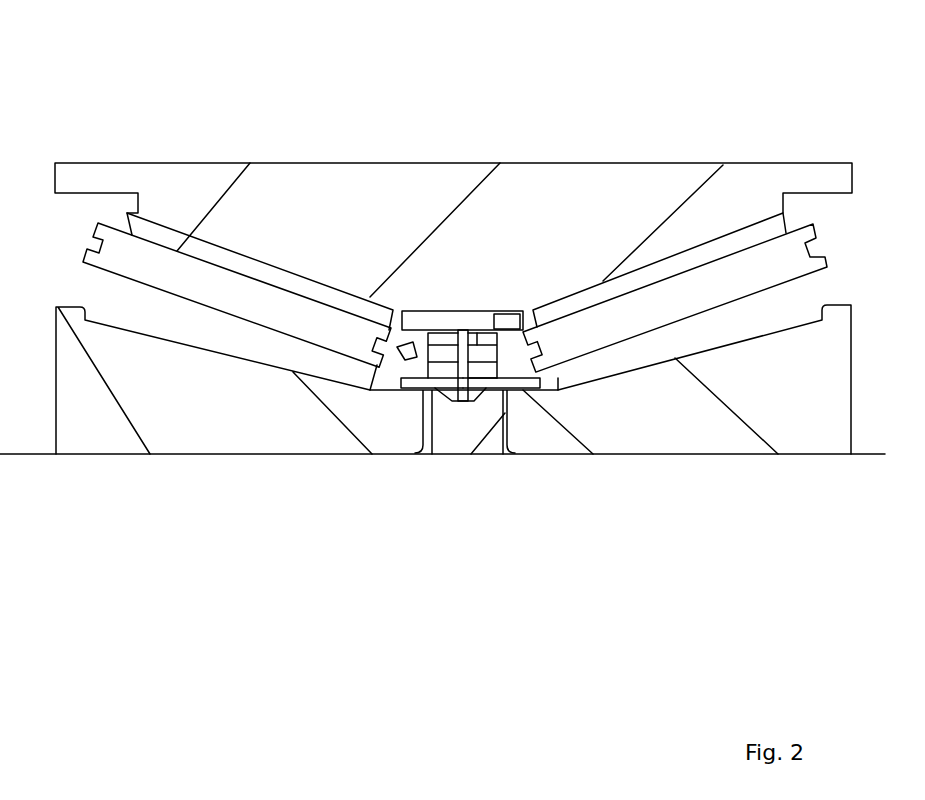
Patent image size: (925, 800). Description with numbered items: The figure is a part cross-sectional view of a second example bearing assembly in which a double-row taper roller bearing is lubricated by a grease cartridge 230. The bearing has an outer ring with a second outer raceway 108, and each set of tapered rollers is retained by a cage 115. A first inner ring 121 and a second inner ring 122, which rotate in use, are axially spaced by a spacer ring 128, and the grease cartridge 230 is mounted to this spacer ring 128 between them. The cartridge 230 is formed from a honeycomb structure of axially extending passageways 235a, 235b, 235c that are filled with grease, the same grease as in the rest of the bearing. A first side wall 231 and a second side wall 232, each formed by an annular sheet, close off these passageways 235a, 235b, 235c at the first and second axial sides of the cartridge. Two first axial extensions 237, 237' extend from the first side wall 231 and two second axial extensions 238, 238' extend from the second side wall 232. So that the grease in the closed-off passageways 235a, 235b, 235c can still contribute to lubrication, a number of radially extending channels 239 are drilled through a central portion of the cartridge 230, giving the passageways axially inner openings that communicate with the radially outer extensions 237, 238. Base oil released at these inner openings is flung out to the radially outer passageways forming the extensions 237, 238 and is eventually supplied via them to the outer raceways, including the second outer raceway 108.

The second outer raceway 108 is at (656, 252).
The cage 115 is at (153, 262).
The first inner ring 121 is at (270, 431).
The second inner ring 122 is at (628, 431).
The spacer ring 128 is at (473, 436).
The grease cartridge 230 is at (404, 358).
The first side wall 231 is at (420, 345).
The second side wall 232 is at (496, 335).
The passageway 235a is at (438, 335).
The passageway 235b is at (473, 347).
The passageway 235c is at (501, 396).
The first axial extension 237 is at (313, 218).
The first axial extension 237' is at (406, 450).
The second axial extension 238 is at (621, 207).
The second axial extension 238' is at (538, 442).
The radially extending channel 239 is at (450, 403).